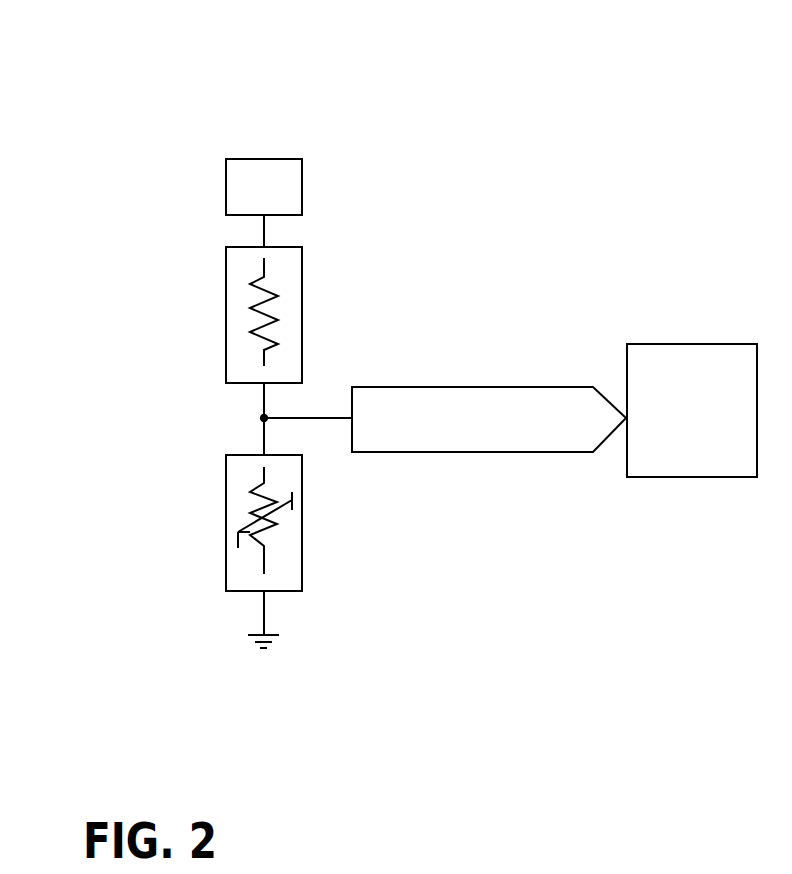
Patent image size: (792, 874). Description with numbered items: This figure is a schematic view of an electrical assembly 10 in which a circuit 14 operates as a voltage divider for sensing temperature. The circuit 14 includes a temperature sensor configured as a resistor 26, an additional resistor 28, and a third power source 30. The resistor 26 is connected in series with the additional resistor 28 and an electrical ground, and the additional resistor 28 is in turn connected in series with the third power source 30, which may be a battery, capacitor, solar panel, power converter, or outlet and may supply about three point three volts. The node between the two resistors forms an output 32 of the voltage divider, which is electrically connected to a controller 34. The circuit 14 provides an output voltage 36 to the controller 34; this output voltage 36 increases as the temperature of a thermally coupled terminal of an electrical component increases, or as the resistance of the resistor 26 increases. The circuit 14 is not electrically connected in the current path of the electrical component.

The system 10 is at (497, 118).
The circuit 14 is at (145, 183).
The temperature sensor 26 is at (226, 525).
The additional resistor 28 is at (226, 307).
The third power source 30 is at (270, 199).
The output 32 is at (262, 417).
The controller 34 is at (704, 426).
The output voltage 36 is at (465, 433).